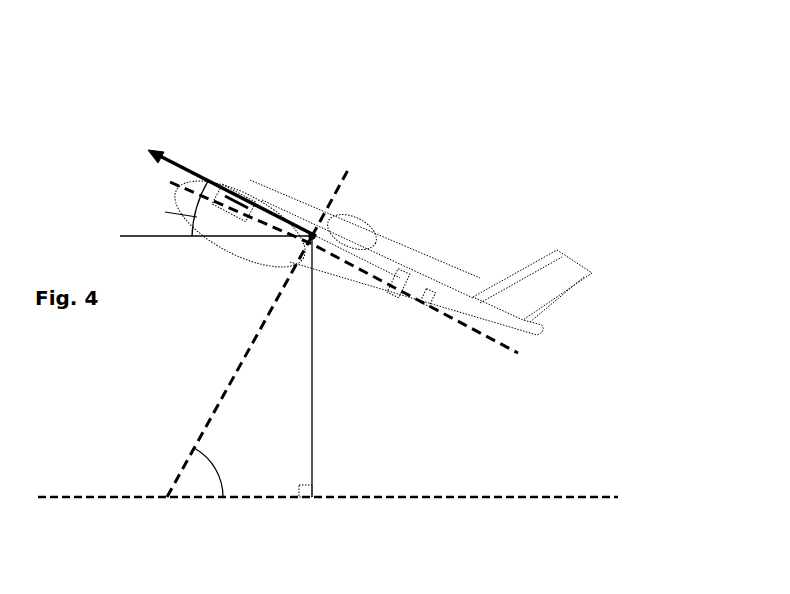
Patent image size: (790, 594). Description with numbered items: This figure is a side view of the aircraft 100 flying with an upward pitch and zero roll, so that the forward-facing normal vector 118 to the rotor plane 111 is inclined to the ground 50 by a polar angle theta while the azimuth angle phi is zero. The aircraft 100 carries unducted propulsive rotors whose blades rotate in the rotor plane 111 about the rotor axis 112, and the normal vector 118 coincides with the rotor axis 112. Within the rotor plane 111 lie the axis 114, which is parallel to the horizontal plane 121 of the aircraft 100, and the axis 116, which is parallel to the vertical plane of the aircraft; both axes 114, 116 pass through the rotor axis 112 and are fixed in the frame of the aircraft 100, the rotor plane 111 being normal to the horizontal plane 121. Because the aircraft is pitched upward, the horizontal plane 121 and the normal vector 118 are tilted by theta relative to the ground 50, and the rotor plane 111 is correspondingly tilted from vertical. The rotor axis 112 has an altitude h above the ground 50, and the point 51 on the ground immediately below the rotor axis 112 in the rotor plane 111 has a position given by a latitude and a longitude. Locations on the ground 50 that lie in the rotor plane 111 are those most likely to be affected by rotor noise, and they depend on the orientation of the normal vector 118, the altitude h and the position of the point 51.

The ground 50 is at (530, 497).
The point on the ground 51 is at (340, 497).
The aircraft 100 is at (608, 255).
The rotor plane 111 is at (252, 343).
The rotor axis 112 is at (382, 270).
The axis 114 is at (313, 240).
The axis 116 is at (340, 177).
The forward-facing normal vector 118 is at (172, 160).
The horizontal plane 121 is at (522, 352).